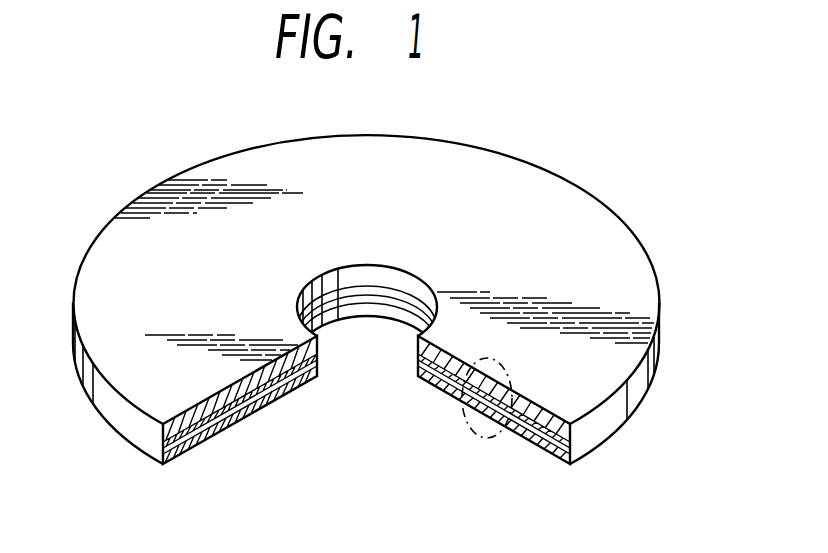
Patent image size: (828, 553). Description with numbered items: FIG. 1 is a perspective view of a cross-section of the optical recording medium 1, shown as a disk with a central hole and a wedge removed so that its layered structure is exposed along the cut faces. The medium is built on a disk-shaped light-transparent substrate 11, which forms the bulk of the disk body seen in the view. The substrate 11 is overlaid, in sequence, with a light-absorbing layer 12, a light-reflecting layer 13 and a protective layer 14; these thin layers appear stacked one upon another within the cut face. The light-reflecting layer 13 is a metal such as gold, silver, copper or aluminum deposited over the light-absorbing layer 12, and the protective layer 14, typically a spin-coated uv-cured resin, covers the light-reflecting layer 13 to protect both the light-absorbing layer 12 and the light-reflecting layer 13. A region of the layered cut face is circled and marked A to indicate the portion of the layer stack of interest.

The optical disc 1 is at (366, 263).
The light-transparent substrate 11 is at (577, 210).
The light-absorbing layer 12 is at (283, 375).
The light-reflecting layer 13 is at (312, 378).
The protective layer 14 is at (247, 410).
The enlarged portion A is at (487, 413).